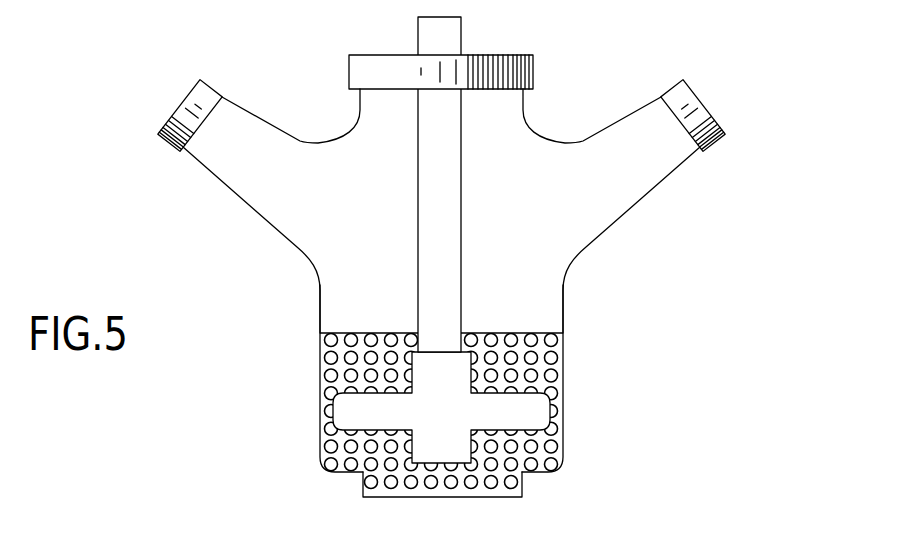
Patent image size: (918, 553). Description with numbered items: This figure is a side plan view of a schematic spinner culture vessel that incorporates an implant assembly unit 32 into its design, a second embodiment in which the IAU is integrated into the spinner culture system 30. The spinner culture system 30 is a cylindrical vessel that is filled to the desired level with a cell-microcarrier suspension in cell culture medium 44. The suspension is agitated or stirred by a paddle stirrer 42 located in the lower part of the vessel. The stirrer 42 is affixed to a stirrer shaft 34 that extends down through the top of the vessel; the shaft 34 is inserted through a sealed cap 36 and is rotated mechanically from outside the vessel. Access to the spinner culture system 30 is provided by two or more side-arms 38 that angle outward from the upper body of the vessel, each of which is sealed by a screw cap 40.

The spinner culture system 30 is at (318, 290).
The implant assembly unit 32 is at (383, 497).
The stirrer shaft 34 is at (452, 36).
The sealed cap 36 is at (532, 72).
The side-arms 38 is at (223, 183).
The screw caps 40 is at (167, 142).
The paddle stirrer 42 is at (335, 412).
The cell culture medium 44 is at (330, 355).